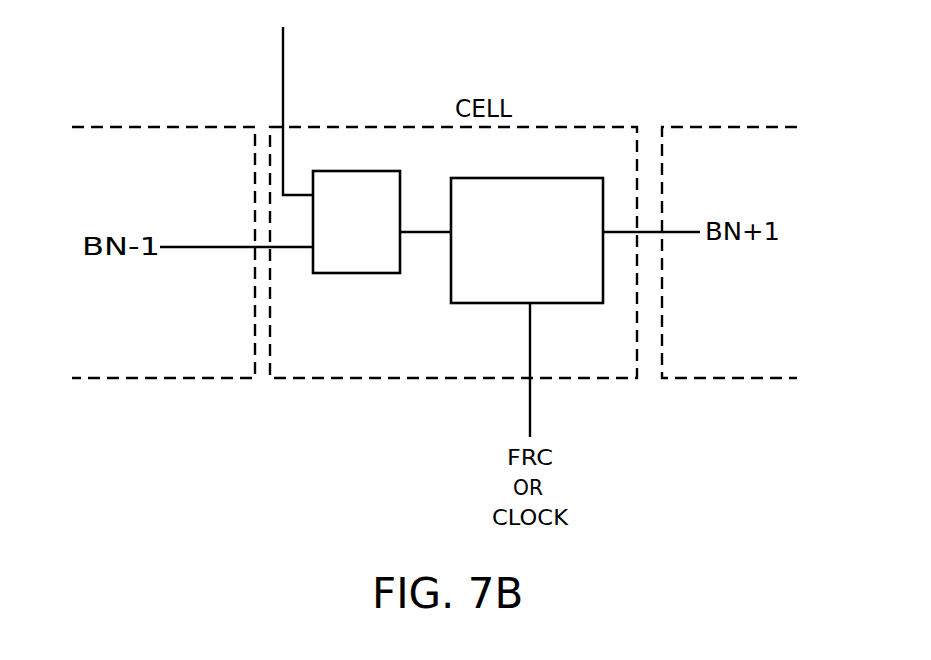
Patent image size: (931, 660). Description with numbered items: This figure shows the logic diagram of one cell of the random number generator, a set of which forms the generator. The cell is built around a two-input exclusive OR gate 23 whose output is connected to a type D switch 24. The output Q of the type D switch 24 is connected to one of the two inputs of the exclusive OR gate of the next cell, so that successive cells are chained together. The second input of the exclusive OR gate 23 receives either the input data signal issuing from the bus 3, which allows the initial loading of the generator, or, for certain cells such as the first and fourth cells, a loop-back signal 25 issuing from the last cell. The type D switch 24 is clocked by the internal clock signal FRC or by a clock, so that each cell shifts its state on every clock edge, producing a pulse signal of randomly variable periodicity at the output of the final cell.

The exclusive OR gate 23 is at (355, 171).
The type D switch 24 is at (522, 178).
The loop-back signal 25 is at (340, 111).
The bus 3 is at (283, 49).